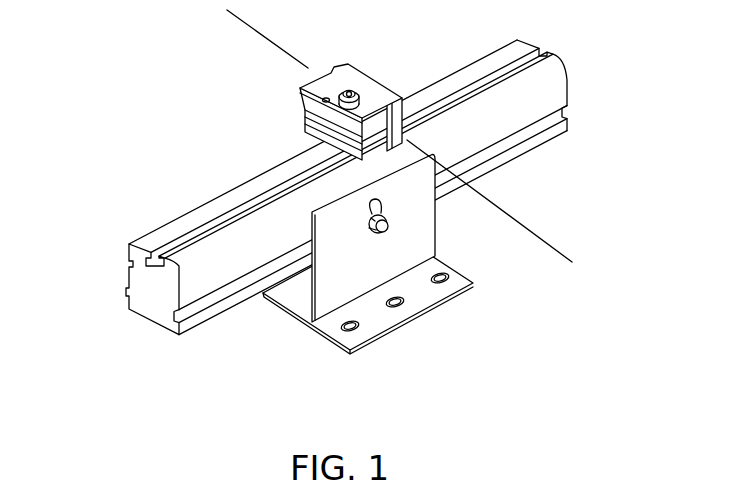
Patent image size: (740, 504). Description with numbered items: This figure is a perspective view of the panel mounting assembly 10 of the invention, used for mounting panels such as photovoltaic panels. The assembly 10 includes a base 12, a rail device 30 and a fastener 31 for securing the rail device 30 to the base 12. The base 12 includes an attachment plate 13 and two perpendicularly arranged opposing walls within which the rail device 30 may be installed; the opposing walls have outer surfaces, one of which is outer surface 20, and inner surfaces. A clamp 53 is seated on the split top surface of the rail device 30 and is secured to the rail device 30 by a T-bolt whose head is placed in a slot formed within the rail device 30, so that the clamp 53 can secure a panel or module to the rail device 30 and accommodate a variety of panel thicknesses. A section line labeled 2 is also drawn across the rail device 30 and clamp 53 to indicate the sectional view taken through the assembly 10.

The assembly 10 is at (102, 121).
The section line 2- 2 is at (246, 36).
The base 12 is at (368, 316).
The attachment plate 13 is at (341, 347).
The outer surface 20 is at (427, 232).
The rail device 30 is at (553, 95).
The fastener 31 is at (401, 248).
The clamp 53 is at (370, 58).